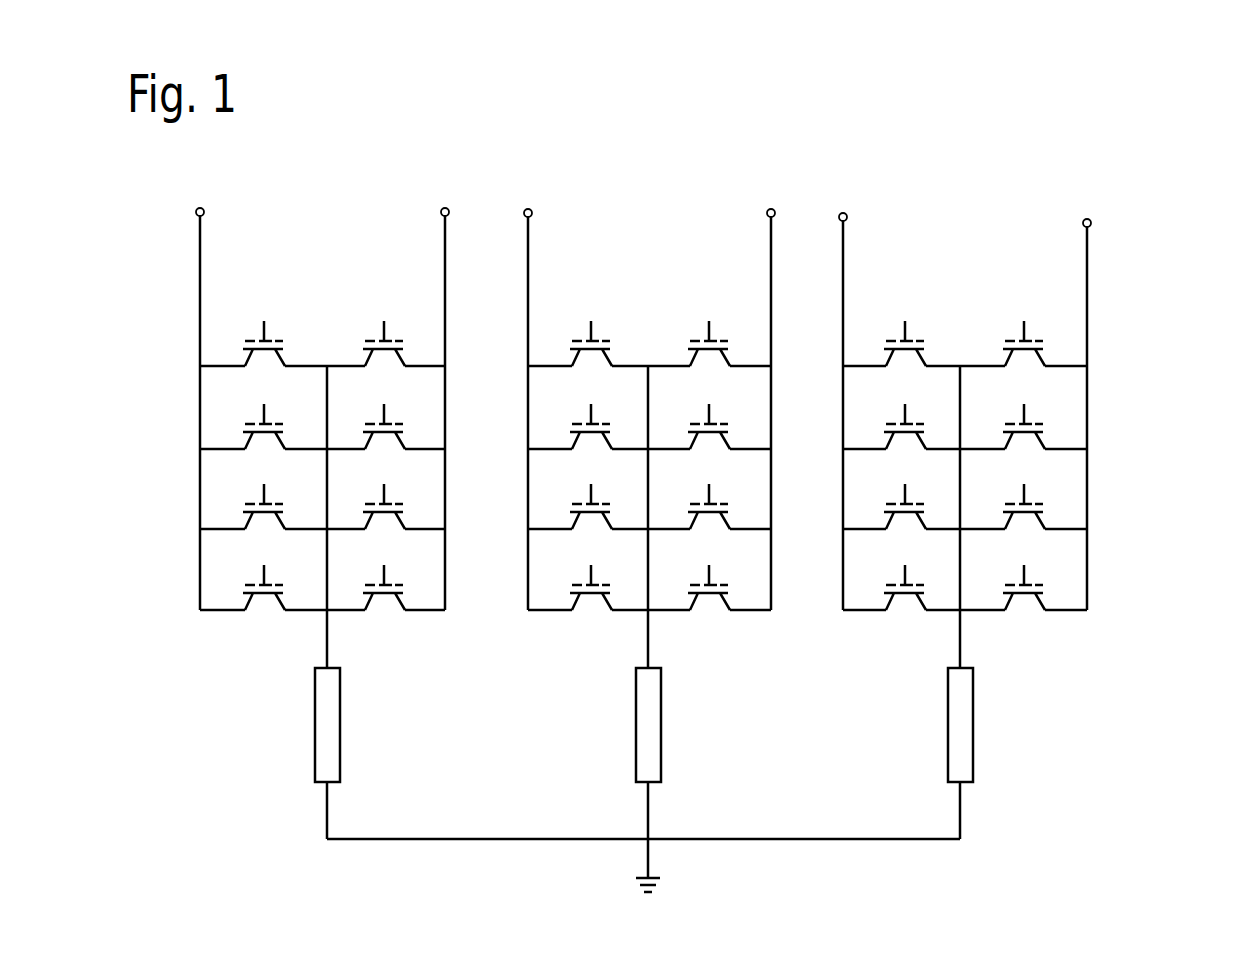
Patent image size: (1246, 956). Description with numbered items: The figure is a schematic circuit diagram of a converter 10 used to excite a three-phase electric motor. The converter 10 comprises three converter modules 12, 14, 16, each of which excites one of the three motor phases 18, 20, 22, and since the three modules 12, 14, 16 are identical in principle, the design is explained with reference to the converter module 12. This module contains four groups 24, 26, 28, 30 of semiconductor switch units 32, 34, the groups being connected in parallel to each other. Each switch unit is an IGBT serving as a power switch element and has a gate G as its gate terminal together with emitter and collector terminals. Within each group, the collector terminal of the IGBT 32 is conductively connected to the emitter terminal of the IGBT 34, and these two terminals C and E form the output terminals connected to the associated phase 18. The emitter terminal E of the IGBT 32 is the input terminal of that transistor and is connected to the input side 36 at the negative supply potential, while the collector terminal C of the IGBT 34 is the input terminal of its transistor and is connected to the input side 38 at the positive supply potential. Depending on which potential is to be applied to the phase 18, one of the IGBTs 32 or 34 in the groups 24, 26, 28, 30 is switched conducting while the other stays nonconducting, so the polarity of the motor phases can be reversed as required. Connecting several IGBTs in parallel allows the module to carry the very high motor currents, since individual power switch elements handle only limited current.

The converter 10 is at (1140, 178).
The converter module 12 is at (170, 477).
The converter module 14 is at (549, 650).
The converter module 16 is at (1182, 462).
The motor phase 18 is at (315, 718).
The motor phase 20 is at (636, 736).
The motor phase 22 is at (946, 738).
The group of semiconductor switch units 24 is at (222, 344).
The group of semiconductor switch units 26 is at (226, 422).
The group of semiconductor switch units 28 is at (226, 514).
The group of semiconductor switch units 30 is at (252, 624).
The IGBT 32 is at (268, 346).
The IGBT 34 is at (378, 347).
The input side 36 is at (192, 271).
The input side 38 is at (455, 293).